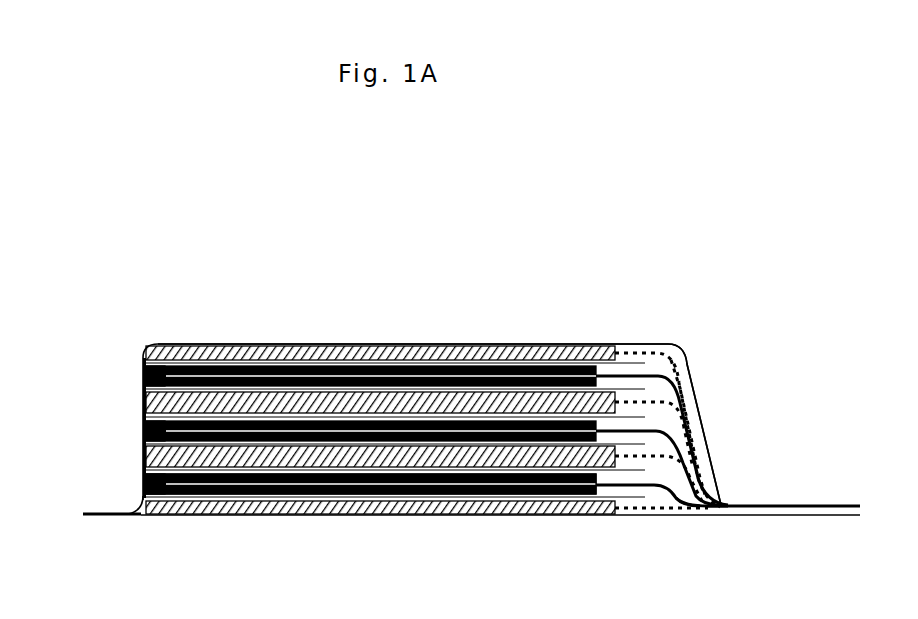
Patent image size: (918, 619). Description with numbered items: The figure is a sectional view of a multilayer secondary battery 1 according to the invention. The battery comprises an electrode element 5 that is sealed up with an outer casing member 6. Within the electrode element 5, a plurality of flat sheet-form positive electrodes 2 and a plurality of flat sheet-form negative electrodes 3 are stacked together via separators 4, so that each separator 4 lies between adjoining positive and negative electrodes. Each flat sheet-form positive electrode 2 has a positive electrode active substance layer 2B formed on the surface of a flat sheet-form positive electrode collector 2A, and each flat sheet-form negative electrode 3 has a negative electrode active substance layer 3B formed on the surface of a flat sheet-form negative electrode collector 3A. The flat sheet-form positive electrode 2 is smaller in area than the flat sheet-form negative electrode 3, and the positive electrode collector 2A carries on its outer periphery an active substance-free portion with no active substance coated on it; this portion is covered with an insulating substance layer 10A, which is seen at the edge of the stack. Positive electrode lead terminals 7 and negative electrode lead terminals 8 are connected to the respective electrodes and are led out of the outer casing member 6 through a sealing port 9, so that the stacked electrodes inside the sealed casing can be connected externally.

The multilayer secondary battery 1 is at (90, 175).
The flat sheet-form positive electrode 2 is at (203, 362).
The flat sheet-form positive electrode collector 2A is at (179, 417).
The positive electrode active substance layer 2B is at (290, 415).
The flat sheet-form negative electrode 3 is at (338, 345).
The flat sheet-form negative electrode collector 3A is at (522, 387).
The negative electrode active substance layer 3B is at (292, 385).
The separator 4 is at (685, 375).
The electrode element 5 is at (660, 381).
The outer casing member 6 is at (588, 337).
The positive electrode lead terminal 7 is at (658, 423).
The negative electrode lead terminal 8 is at (672, 447).
The sealing port 9 is at (737, 507).
The insulating substance layer 10A is at (137, 412).